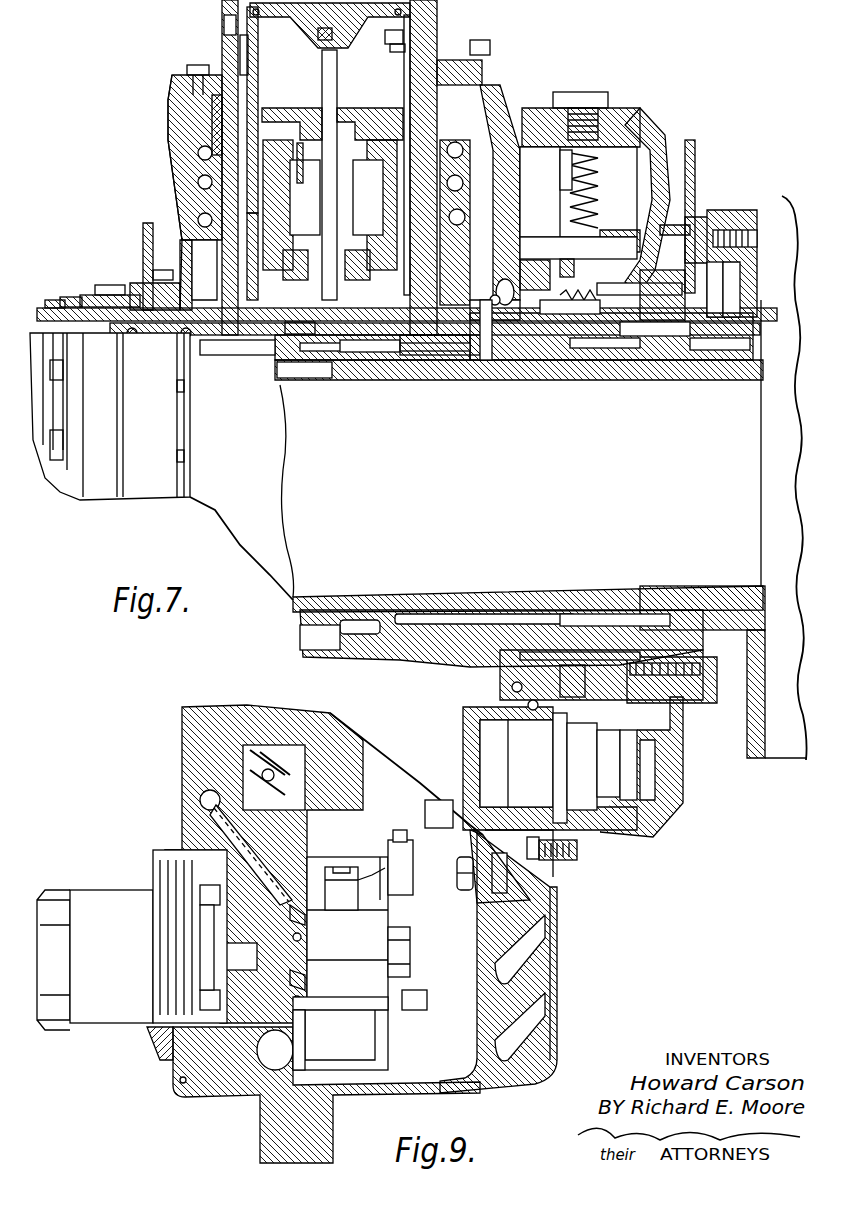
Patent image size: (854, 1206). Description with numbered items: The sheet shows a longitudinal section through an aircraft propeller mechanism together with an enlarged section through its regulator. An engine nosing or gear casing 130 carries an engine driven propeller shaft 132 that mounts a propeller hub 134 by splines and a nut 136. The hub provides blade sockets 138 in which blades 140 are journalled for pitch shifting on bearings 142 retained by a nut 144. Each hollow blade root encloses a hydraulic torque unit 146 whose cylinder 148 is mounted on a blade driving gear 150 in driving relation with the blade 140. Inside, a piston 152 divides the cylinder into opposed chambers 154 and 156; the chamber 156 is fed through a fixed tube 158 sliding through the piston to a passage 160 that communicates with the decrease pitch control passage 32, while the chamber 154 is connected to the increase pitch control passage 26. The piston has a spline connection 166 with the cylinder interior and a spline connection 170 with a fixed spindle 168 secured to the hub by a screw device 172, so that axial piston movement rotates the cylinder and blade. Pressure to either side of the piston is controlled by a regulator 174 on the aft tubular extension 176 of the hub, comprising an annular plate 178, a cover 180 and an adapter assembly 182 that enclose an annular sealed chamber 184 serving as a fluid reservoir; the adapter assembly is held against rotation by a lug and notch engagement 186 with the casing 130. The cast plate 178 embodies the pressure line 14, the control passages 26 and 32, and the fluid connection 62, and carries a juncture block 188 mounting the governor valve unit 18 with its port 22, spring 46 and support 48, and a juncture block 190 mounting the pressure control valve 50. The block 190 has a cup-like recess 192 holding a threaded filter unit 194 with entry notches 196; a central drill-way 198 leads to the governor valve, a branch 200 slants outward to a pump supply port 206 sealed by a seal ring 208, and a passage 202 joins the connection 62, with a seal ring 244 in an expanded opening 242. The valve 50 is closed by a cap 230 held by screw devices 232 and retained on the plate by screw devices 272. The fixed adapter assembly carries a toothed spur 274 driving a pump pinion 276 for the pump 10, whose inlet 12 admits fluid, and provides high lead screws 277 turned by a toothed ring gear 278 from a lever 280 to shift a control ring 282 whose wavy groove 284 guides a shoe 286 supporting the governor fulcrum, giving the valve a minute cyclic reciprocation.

In FIG. 7, the pump 10 is at (493, 760).
In FIG. 7, the inlet 12 is at (600, 832).
In FIG. 7, the pressure line 14 is at (528, 705).
In FIG. 9, the pressure line 14 is at (190, 868).
In FIG. 7, the governor valve unit 18 is at (538, 135).
In FIG. 7, the port 22 is at (540, 165).
In FIG. 7, the control passage 26 is at (512, 687).
In FIG. 9, the control passage 26 is at (200, 797).
In FIG. 7, the control passage 32 is at (495, 305).
In FIG. 7, the spring 46 is at (608, 210).
In FIG. 7, the support 48 is at (600, 150).
In FIG. 9, the pressure control valve 50 is at (424, 887).
In FIG. 9, the fluid connection 62 is at (240, 832).
In FIG. 7, the engine nosing 130 is at (782, 758).
In FIG. 7, the propeller shaft 132 is at (705, 595).
In FIG. 7, the propeller hub 134 is at (398, 345).
In FIG. 7, the nut 136 is at (340, 372).
In FIG. 7, the blade socket 138 is at (173, 143).
In FIG. 7, the blade 140 is at (222, 28).
In FIG. 7, the bearings 142 is at (207, 222).
In FIG. 7, the nut 144 is at (190, 112).
In FIG. 7, the hydraulic torque unit 146 is at (243, 53).
In FIG. 7, the cylinder 148 is at (392, 50).
In FIG. 7, the blade driving gear 150 is at (228, 355).
In FIG. 7, the piston 152 is at (290, 108).
In FIG. 7, the chamber 154 is at (370, 108).
In FIG. 7, the chamber 156 is at (400, 40).
In FIG. 7, the fixed tube 158 is at (337, 68).
In FIG. 7, the passage 160 is at (445, 345).
In FIG. 7, the spline connection 166 is at (265, 200).
In FIG. 7, the fixed spindle 168 is at (300, 225).
In FIG. 7, the spline connection 170 is at (300, 183).
In FIG. 7, the screw device 172 is at (362, 240).
In FIG. 7, the regulator 174 is at (625, 113).
In FIG. 7, the aft tubular extension 176 is at (590, 348).
In FIG. 7, the annular plate 178 is at (486, 360).
In FIG. 9, the annular plate 178 is at (190, 740).
In FIG. 7, the cover 180 is at (690, 148).
In FIG. 9, the cover 180 is at (555, 1035).
In FIG. 7, the adapter assembly 182 is at (645, 336).
In FIG. 9, the adapter assembly 182 is at (477, 840).
In FIG. 7, the annular sealed chamber 184 is at (612, 204).
In FIG. 7, the lug and notch engagement 186 is at (737, 295).
In FIG. 7, the juncture block 188 is at (513, 205).
In FIG. 9, the juncture block 190 is at (225, 1085).
In FIG. 9, the cup-like recess 192 is at (222, 1040).
In FIG. 9, the filter unit 194 is at (88, 1018).
In FIG. 9, the entry notches 196 is at (200, 960).
In FIG. 9, the central drill-way 198 is at (230, 945).
In FIG. 9, the branch 200 is at (283, 1020).
In FIG. 9, the passage 202 is at (330, 868).
In FIG. 9, the pump supply port 206 is at (303, 980).
In FIG. 9, the seal ring 208 is at (300, 1003).
In FIG. 9, the cap 230 is at (388, 865).
In FIG. 9, the screw devices 232 is at (372, 868).
In FIG. 9, the expanded opening 242 is at (300, 915).
In FIG. 9, the seal ring 244 is at (302, 938).
In FIG. 9, the screw devices 272 is at (410, 952).
In FIG. 7, the toothed spur 274 is at (645, 630).
In FIG. 9, the toothed spur 274 is at (425, 812).
In FIG. 7, the pump pinion 276 is at (610, 820).
In FIG. 7, the high lead screws 277 is at (705, 350).
In FIG. 7, the toothed ring gear 278 is at (720, 245).
In FIG. 7, the lever 280 is at (695, 168).
In FIG. 7, the control ring 282 is at (555, 314).
In FIG. 7, the groove 284 is at (575, 695).
In FIG. 7, the shoe 286 is at (568, 276).